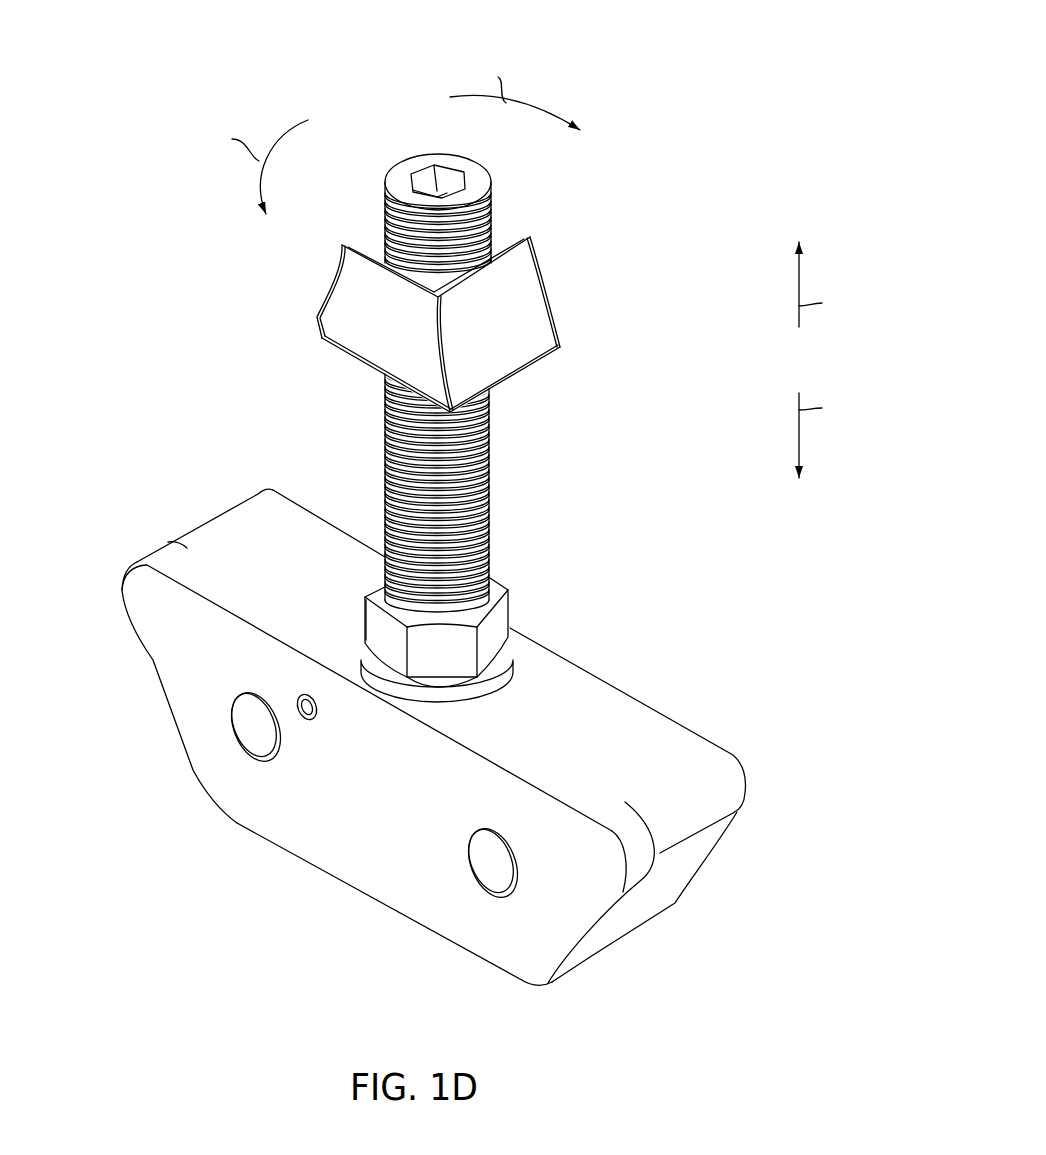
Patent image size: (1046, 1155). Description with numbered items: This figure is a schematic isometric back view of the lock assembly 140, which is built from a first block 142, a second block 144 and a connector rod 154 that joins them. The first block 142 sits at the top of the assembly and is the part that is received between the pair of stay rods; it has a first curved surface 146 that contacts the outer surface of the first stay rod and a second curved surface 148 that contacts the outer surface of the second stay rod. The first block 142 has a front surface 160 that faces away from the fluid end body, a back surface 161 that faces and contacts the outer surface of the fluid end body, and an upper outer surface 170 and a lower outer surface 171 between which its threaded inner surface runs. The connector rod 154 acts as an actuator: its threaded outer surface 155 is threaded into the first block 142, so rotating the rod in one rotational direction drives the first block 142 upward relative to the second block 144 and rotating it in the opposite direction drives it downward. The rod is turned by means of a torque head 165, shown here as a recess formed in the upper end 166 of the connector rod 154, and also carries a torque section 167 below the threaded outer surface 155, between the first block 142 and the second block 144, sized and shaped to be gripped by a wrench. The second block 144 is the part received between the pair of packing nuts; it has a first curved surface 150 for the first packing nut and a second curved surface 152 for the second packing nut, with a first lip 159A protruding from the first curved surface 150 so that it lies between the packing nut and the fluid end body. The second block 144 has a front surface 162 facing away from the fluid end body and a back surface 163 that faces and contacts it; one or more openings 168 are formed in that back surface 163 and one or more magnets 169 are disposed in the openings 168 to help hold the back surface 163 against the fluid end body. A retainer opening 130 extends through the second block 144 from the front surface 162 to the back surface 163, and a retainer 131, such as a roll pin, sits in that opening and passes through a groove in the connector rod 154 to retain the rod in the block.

The lock assembly 140 is at (730, 68).
The first block 142 is at (550, 292).
The second block 144 is at (682, 703).
The first curved surface 146 is at (517, 338).
The second curved surface 148 is at (333, 280).
The first curved surface 150 is at (673, 865).
The second curved surface 152 is at (163, 703).
The connector rod 154 is at (513, 622).
The threaded outer surface 155 is at (412, 440).
The first lip 159A is at (603, 915).
The front surface 160 is at (531, 228).
The back surface 161 is at (350, 312).
The front surface 162 is at (622, 688).
The back surface 163 is at (297, 810).
The torque head 165 is at (447, 175).
The upper end 166 is at (481, 178).
The torque section 167 is at (377, 625).
The openings 168 is at (233, 697).
The magnets 169 is at (248, 732).
The upper outer surface 170 is at (365, 237).
The lower outer surface 171 is at (345, 358).
The retainer opening 130 is at (320, 707).
The retainer 131 is at (312, 718).